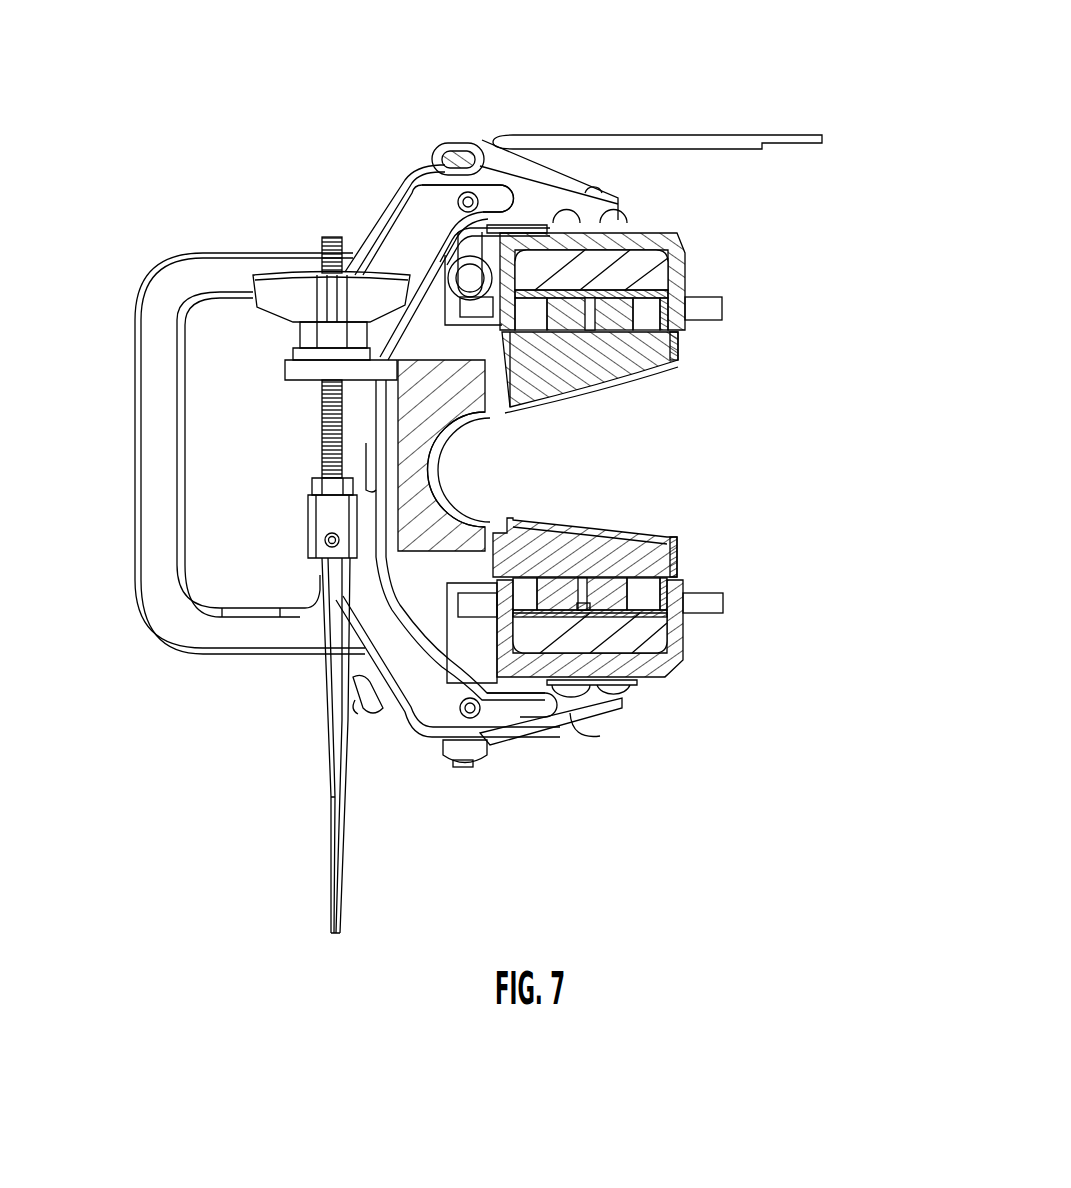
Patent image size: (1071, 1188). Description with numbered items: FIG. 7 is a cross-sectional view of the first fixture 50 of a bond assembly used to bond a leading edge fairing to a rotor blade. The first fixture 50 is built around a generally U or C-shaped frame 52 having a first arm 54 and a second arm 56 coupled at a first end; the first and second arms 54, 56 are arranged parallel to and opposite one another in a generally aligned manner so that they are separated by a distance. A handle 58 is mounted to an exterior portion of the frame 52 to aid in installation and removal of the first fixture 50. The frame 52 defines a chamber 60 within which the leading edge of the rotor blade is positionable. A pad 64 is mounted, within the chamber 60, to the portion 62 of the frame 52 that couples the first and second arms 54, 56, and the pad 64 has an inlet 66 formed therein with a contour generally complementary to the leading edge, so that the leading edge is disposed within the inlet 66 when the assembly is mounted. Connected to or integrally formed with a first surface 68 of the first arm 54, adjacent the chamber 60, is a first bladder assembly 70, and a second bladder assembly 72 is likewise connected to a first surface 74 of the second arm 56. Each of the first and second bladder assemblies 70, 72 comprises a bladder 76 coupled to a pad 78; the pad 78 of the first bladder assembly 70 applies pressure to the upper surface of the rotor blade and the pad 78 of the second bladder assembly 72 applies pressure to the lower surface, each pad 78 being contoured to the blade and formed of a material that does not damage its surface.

The first fixture 50 is at (893, 185).
The frame 52 is at (360, 199).
The first arm 54 is at (536, 207).
The second arm 56 is at (535, 707).
The handle 58 is at (165, 478).
The chamber 60 is at (635, 453).
The portion of the frame 62 is at (377, 600).
The pad 64 is at (432, 527).
The inlet 66 is at (455, 478).
The first surface of the first arm 68 is at (535, 237).
The first bladder assembly 70 is at (712, 266).
The second bladder assembly 72 is at (700, 657).
The first surface of the second arm 74 is at (607, 680).
The bladder 76 is at (598, 272).
The pad 78 is at (583, 338).